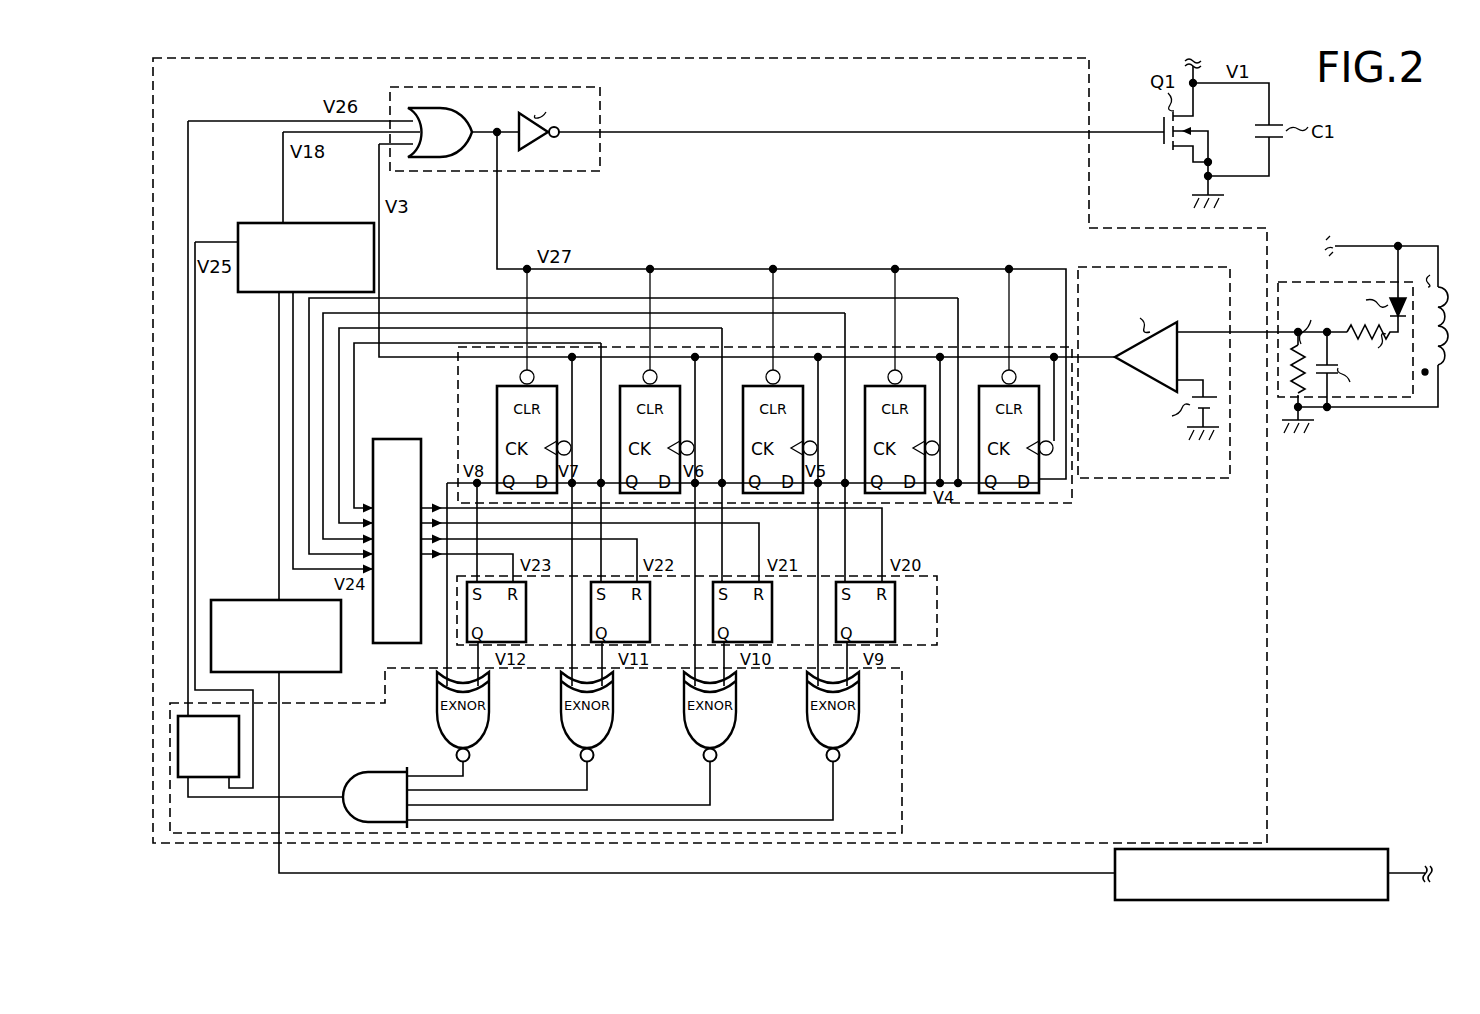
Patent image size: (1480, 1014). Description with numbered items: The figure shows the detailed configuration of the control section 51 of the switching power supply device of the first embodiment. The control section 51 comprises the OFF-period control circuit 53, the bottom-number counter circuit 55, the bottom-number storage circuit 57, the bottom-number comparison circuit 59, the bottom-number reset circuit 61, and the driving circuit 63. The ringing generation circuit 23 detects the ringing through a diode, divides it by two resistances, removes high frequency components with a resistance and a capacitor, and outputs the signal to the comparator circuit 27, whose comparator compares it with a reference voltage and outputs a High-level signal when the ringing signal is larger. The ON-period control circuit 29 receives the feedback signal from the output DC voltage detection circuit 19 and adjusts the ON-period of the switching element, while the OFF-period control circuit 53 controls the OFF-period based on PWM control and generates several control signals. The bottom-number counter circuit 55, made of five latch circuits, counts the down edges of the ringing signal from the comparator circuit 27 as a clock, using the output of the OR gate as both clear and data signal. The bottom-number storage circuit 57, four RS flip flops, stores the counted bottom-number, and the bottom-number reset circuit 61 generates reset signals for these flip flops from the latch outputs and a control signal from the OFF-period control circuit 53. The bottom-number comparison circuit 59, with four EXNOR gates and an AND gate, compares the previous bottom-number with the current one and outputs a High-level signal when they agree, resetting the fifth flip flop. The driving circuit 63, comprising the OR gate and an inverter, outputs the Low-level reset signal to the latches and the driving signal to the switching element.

The output DC voltage detection circuit 19 is at (1364, 849).
The ringing generation circuit 23 is at (1365, 400).
The comparator circuit 27 is at (1165, 480).
The ON-period control circuit 29 is at (242, 600).
The control section 51 is at (1268, 601).
The OFF-period control circuit 53 is at (252, 293).
The bottom-number counter circuit 55 is at (1040, 503).
The bottom-number storage circuit 57 is at (937, 608).
The bottom-number comparison circuit 59 is at (902, 741).
The bottom-number reset circuit 61 is at (405, 436).
The driving circuit 63 is at (601, 158).